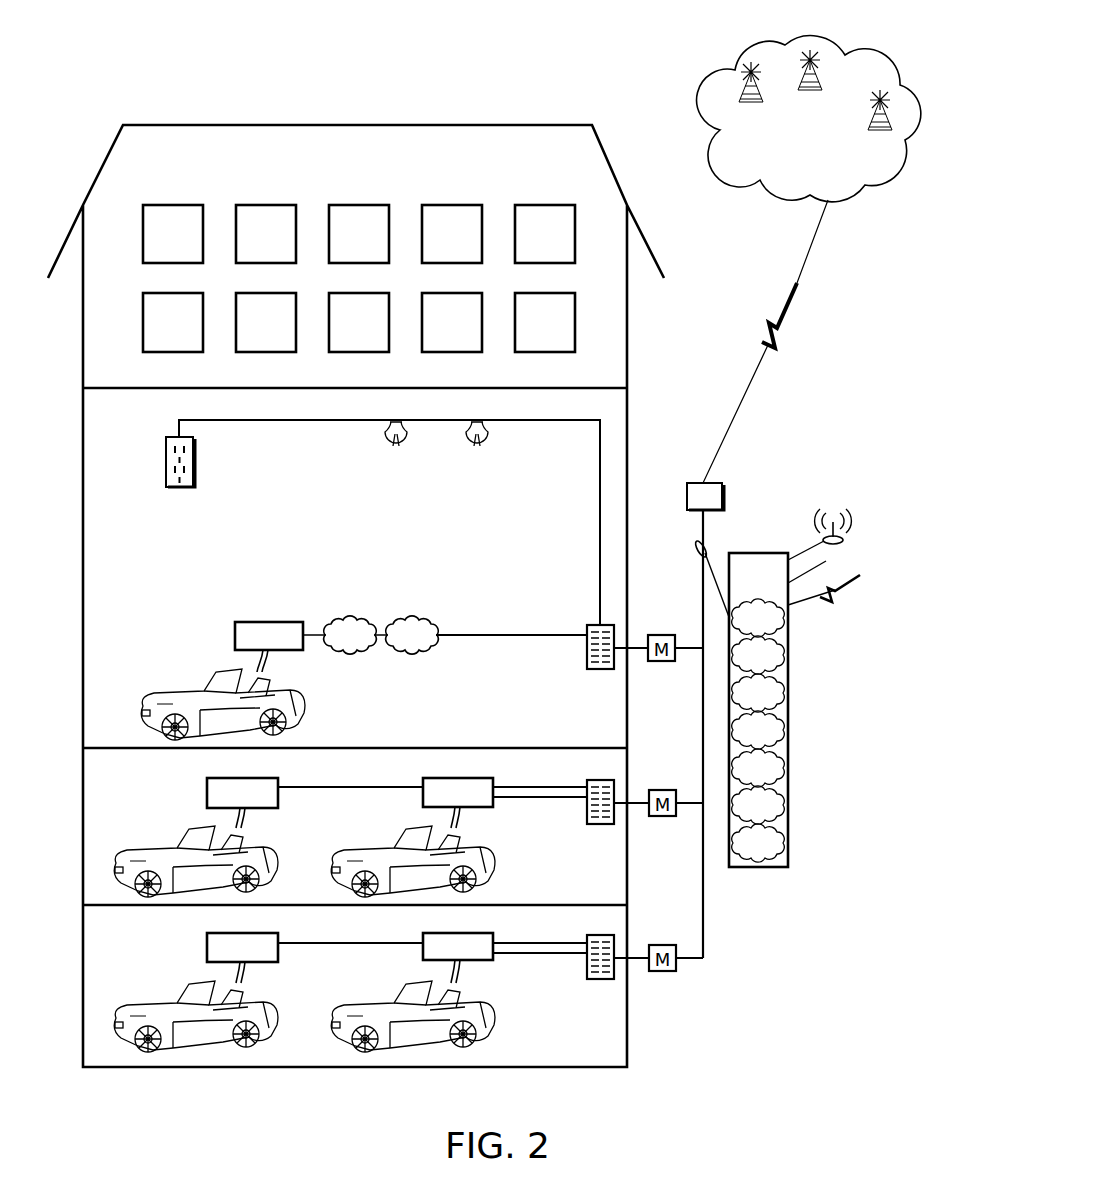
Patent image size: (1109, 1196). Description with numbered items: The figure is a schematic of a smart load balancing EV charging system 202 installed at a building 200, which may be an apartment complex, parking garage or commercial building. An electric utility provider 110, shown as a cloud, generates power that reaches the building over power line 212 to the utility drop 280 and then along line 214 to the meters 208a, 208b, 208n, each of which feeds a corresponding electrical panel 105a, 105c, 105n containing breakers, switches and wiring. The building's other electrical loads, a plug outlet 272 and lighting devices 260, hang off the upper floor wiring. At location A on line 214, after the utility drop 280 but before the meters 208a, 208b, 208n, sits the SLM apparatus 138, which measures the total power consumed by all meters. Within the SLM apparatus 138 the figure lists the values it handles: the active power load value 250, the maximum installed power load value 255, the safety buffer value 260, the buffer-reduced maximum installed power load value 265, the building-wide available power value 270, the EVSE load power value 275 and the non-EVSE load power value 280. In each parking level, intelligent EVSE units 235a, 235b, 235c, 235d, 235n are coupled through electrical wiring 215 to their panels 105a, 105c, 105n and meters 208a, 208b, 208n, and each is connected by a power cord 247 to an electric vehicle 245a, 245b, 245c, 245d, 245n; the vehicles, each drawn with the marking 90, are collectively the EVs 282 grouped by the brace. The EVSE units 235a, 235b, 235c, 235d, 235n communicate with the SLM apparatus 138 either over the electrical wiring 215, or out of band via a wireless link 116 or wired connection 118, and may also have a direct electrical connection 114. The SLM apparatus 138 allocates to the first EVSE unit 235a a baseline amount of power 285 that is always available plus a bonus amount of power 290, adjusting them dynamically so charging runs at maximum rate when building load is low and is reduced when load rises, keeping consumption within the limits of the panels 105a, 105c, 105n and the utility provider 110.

The building 200 is at (100, 175).
The electric utility provider 110 is at (862, 52).
The power line 212 is at (795, 284).
The utility drop 280 is at (716, 483).
The line 214 is at (703, 535).
The plug outlet 272 is at (166, 460).
The lighting device 260 is at (584, 567).
The SLM apparatus 138 is at (755, 553).
The wireless link 116 is at (845, 541).
The out-of-band wired connection 118 is at (826, 563).
The direct electrical connection 114 is at (830, 596).
The smart load balancing EV charging system 202 is at (845, 698).
The active power load value 250 is at (758, 618).
The maximum installed power load value 255 is at (758, 655).
The buffer-reduced maximum installed power load value 265 is at (758, 730).
The building-wide available power value 270 is at (758, 768).
The EVSE load power value 275 is at (758, 805).
The intelligent EVSE unit 235a is at (280, 622).
The intelligent EVSE unit 235b is at (258, 778).
The intelligent EVSE unit 235c is at (442, 778).
The intelligent EVSE unit 235d is at (258, 933).
The intelligent EVSE unit 235n is at (442, 933).
The electric vehicle 245a is at (198, 672).
The electric vehicle 245b is at (163, 838).
The electric vehicle 245c is at (380, 838).
The electric vehicle 245d is at (163, 993).
The electric vehicle 245n is at (380, 993).
The power cord 247 is at (268, 659).
The baseline amount of power 285 is at (345, 635).
The bonus amount of power 290 is at (412, 635).
The electrical wiring 215 is at (510, 634).
The electrical panel 105a is at (594, 625).
The electrical panel 105c is at (593, 780).
The electrical panel 105n is at (593, 935).
The meter 208a is at (653, 635).
The meter 208b is at (661, 790).
The meter 208n is at (661, 945).
The electric vehicle 90 is at (246, 854).
The EVs 282 is at (72, 636).